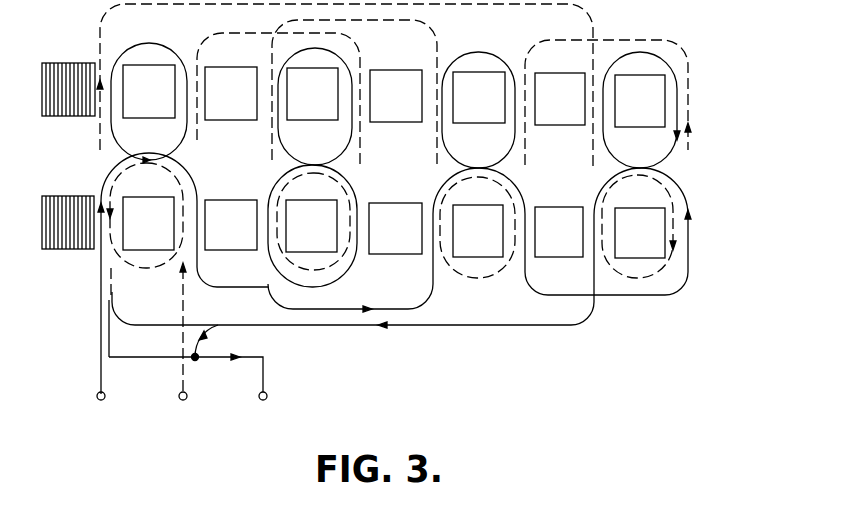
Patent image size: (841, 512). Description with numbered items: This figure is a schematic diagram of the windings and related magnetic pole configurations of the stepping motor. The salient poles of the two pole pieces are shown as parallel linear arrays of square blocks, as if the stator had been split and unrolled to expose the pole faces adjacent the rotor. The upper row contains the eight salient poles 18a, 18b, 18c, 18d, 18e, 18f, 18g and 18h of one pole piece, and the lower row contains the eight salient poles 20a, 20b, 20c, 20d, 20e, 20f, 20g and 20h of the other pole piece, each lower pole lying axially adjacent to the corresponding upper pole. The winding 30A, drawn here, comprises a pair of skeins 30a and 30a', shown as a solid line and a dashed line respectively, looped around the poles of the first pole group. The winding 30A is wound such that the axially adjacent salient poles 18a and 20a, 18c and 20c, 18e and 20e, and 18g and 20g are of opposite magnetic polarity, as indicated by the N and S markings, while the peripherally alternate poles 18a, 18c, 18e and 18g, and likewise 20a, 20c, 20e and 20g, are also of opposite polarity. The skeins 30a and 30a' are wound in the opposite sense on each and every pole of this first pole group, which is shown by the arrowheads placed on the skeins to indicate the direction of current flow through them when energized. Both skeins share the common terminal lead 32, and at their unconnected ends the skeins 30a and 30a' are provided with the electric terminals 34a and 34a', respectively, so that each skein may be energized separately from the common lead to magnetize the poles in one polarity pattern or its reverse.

The salient pole 18a is at (134, 113).
The salient pole 18b is at (216, 115).
The salient pole 18c is at (297, 116).
The salient pole 18d is at (381, 118).
The salient pole 18e is at (464, 120).
The salient pole 18f is at (546, 121).
The salient pole 18g is at (625, 123).
The salient pole 18h is at (47, 98).
The salient pole 20a is at (133, 245).
The salient pole 20b is at (216, 246).
The salient pole 20c is at (296, 248).
The salient pole 20d is at (380, 250).
The salient pole 20e is at (463, 253).
The salient pole 20f is at (545, 253).
The salient pole 20g is at (625, 255).
The salient pole 20h is at (50, 229).
The winding 30A is at (107, 169).
The skein 30a is at (394, 218).
The skein 30a' is at (419, 199).
The common terminal lead 32 is at (263, 378).
The electric terminal 34a is at (118, 400).
The electric terminal 34a' is at (212, 401).